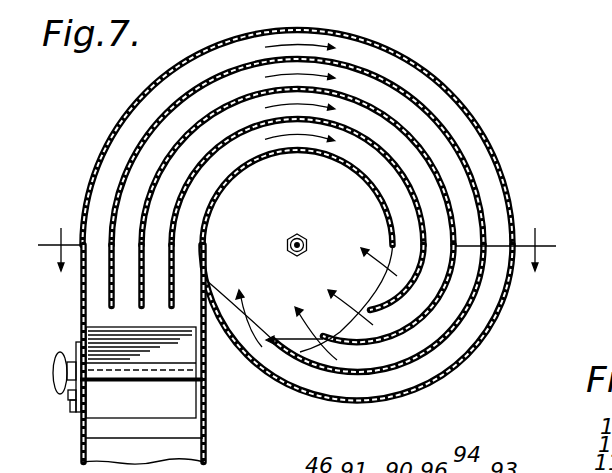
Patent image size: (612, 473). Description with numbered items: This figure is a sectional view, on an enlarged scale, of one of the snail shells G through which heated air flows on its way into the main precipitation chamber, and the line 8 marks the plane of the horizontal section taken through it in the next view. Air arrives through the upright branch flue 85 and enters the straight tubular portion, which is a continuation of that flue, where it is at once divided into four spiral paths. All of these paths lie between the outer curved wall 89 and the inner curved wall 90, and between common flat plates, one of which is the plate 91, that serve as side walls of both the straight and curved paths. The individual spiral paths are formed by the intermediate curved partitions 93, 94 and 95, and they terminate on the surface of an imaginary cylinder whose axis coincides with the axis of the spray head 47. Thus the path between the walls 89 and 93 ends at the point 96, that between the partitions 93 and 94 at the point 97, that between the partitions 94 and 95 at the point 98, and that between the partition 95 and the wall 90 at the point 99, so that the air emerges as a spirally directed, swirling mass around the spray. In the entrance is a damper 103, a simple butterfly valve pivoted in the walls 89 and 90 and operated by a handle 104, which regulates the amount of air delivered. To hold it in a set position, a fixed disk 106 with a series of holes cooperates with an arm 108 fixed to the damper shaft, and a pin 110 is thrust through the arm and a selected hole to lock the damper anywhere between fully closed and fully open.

The snail shell G is at (463, 105).
The section line 8— 8 is at (293, 249).
The spray head 47 is at (297, 234).
The branch flue 85 is at (195, 448).
The outer curved wall 89 is at (95, 164).
The inner curved wall 90 is at (220, 186).
The flat plate 91 is at (360, 226).
The intermediate curved partition 93 is at (102, 275).
The intermediate curved partition 94 is at (132, 275).
The intermediate curved partition 95 is at (162, 275).
The termination point 96 is at (246, 320).
The termination point 97 is at (308, 330).
The termination point 98 is at (352, 321).
The termination point 99 is at (387, 272).
The damper 103 is at (178, 404).
The handle 104 is at (58, 385).
The fixed disk 106 is at (76, 348).
The arm 108 is at (78, 420).
The pin 110 is at (70, 400).